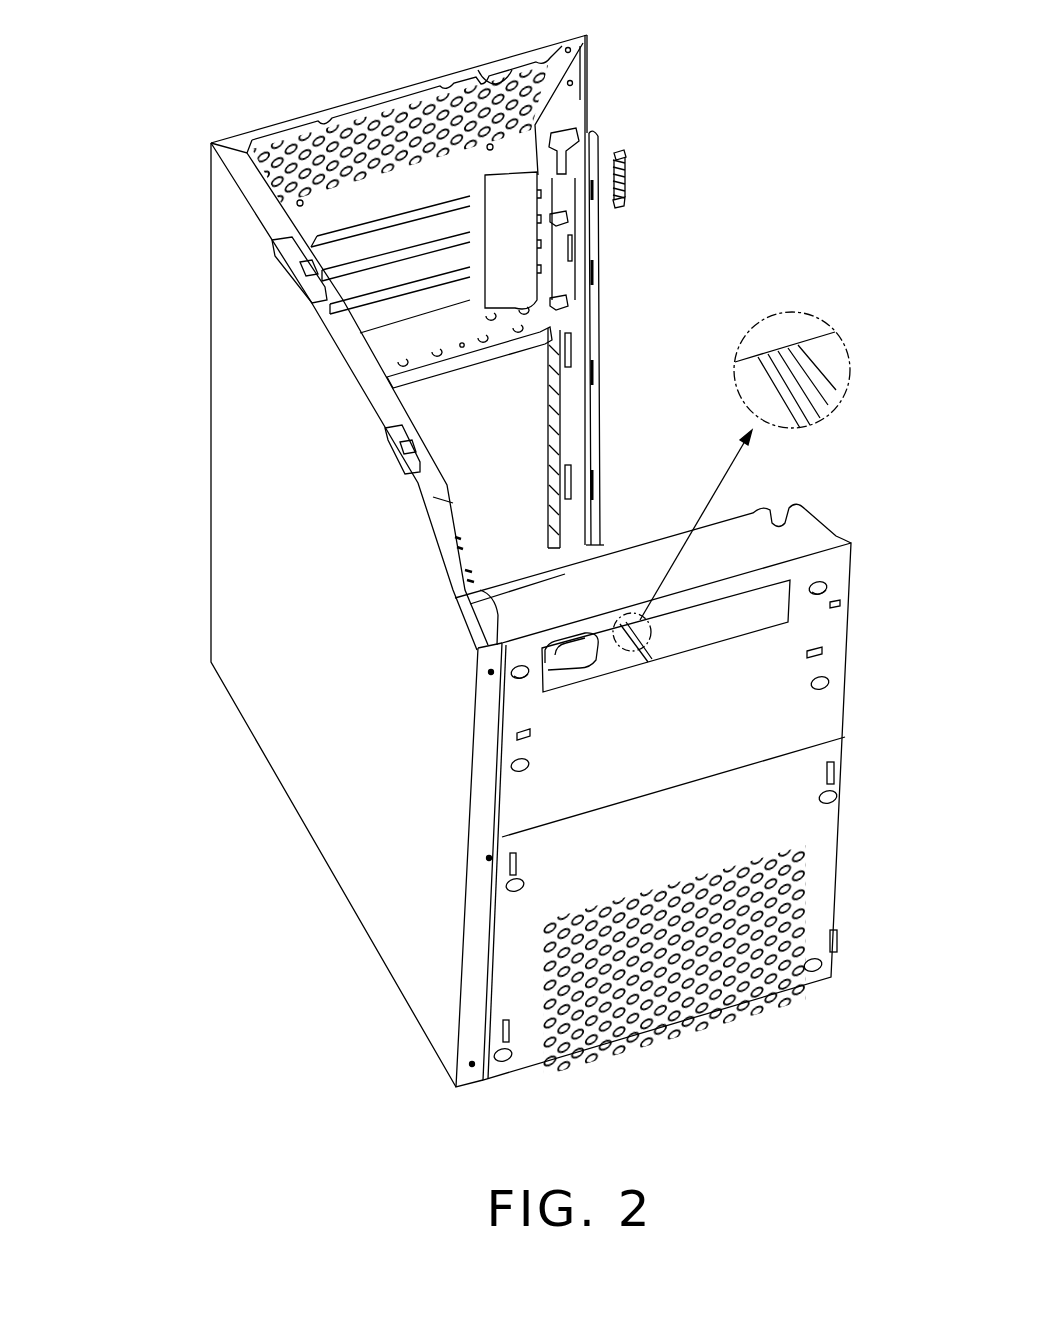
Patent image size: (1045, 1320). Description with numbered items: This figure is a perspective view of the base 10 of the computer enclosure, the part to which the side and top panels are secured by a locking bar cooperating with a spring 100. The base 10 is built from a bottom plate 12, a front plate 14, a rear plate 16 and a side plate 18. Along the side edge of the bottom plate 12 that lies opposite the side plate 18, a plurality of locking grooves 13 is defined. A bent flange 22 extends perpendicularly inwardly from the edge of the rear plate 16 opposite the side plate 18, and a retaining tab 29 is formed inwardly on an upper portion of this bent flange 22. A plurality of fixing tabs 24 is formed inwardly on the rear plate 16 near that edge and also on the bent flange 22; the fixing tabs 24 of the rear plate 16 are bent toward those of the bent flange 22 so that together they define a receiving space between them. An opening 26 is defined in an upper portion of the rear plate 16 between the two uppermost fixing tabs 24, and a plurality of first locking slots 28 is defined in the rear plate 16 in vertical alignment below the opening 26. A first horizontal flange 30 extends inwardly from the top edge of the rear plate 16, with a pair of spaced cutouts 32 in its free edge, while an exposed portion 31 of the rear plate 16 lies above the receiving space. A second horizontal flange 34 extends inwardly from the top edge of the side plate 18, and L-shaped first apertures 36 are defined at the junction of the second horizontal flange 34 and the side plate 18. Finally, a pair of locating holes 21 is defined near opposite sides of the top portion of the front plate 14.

The base 10 is at (828, 498).
The bottom plate 12 is at (578, 556).
The locking grooves 13 is at (792, 380).
The front plate 14 is at (820, 850).
The rear plate 16 is at (538, 120).
The side plate 18 is at (350, 832).
The locating holes 21 is at (828, 588).
The bent flange 22 is at (597, 258).
The fixing tabs 24 is at (563, 224).
The opening 26 is at (573, 134).
The first locking slots 28 is at (595, 288).
The retaining tab 29 is at (589, 140).
The first horizontal flange 30 is at (252, 133).
The exposed portion 31 is at (577, 53).
The cutouts 32 is at (492, 66).
The second horizontal flange 34 is at (292, 259).
The first apertures 36 is at (405, 460).
The spring 100 is at (628, 175).